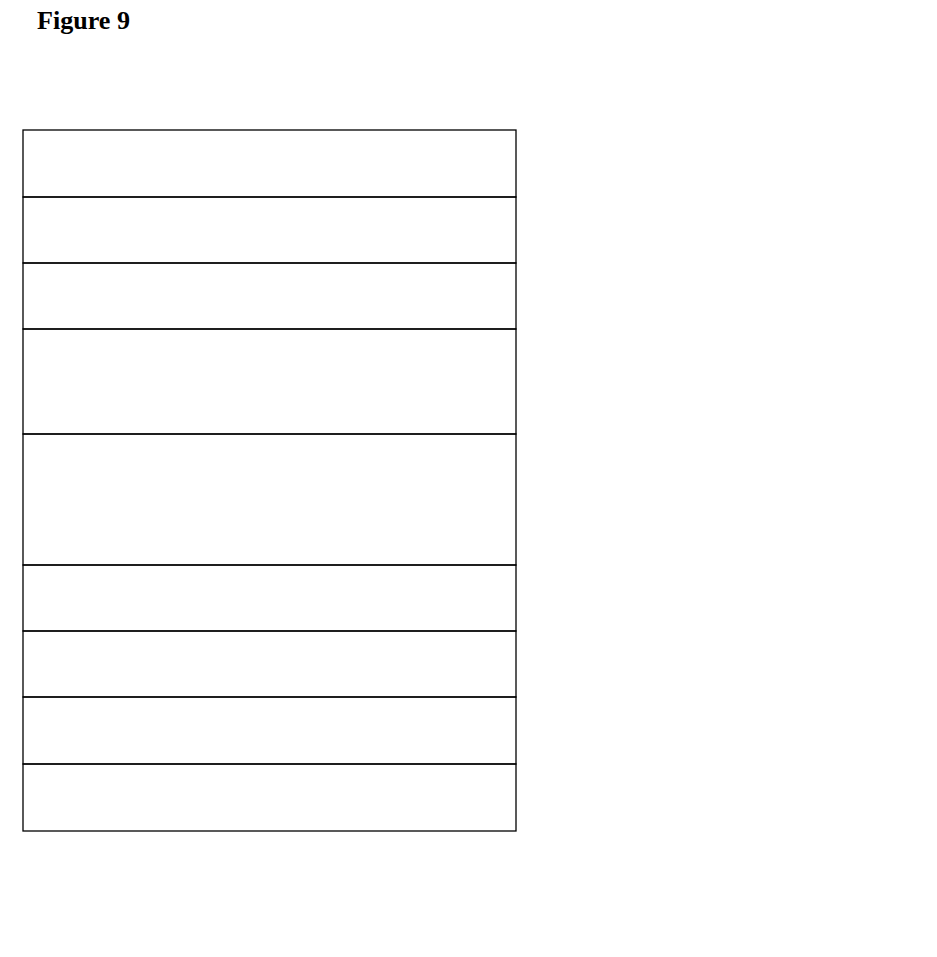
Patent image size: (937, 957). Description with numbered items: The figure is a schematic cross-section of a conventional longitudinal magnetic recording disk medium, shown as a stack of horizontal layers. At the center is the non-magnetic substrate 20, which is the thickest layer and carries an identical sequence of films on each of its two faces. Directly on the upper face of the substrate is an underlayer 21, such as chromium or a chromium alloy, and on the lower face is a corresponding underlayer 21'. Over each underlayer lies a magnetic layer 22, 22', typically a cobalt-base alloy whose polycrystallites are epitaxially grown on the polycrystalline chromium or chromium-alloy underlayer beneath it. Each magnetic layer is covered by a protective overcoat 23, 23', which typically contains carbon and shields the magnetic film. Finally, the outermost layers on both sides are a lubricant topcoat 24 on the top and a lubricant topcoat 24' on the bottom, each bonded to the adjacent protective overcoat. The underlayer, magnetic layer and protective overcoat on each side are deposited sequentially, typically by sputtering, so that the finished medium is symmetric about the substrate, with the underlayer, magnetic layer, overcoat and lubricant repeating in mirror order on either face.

The lubricant topcoat 24 is at (406, 163).
The protective overcoat 23 is at (403, 230).
The magnetic layer 22 is at (440, 296).
The underlayer 21 is at (413, 381).
The non-magnetic substrate 20 is at (608, 520).
The underlayer 21' is at (418, 598).
The magnetic layer 22' is at (442, 664).
The protective overcoat 23' is at (407, 730).
The lubricant topcoat 24' is at (410, 797).